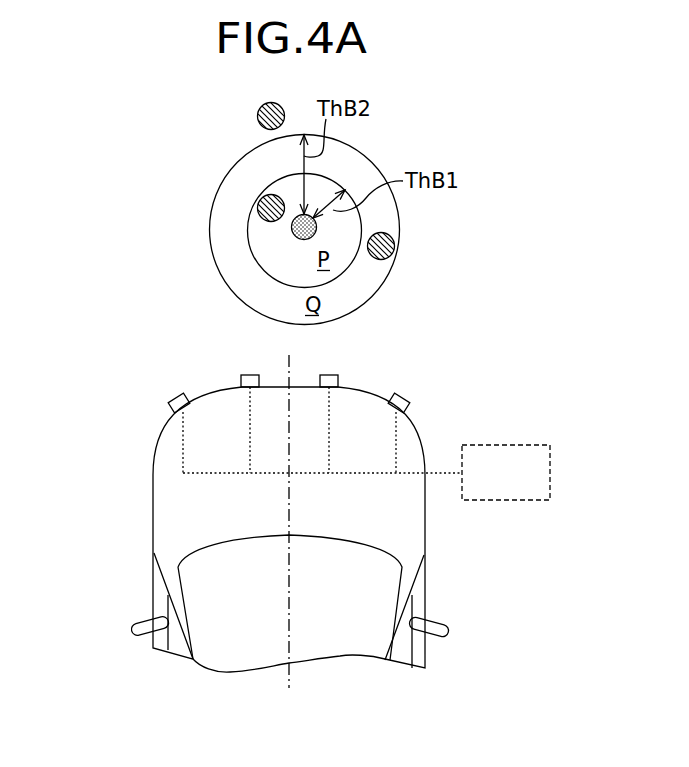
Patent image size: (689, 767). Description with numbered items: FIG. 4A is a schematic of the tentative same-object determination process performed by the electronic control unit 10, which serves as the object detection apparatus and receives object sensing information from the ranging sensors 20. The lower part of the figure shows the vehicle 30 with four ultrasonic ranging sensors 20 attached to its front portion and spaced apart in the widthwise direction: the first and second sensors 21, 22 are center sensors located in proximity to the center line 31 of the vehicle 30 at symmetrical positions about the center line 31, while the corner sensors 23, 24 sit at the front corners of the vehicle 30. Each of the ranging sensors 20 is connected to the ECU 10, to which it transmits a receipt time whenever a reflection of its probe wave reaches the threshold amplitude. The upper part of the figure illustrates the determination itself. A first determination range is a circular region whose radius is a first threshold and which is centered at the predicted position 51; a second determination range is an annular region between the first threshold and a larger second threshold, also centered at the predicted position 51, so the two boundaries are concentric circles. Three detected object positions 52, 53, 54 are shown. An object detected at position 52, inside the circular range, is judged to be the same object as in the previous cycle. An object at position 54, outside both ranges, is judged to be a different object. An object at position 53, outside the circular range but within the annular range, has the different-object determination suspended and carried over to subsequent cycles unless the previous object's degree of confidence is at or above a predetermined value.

The electronic control unit (ECU) 10 is at (528, 445).
The ranging sensors 20 is at (413, 360).
The first sensor 21 is at (330, 375).
The second sensor 22 is at (243, 375).
The corner sensor 23 is at (405, 399).
The corner sensor 24 is at (175, 399).
The vehicle 30 is at (425, 524).
The center line 31 is at (291, 535).
The predicted position 51 is at (294, 233).
The detected object position 52 is at (258, 213).
The detected object position 53 is at (394, 240).
The detected object position 54 is at (258, 111).